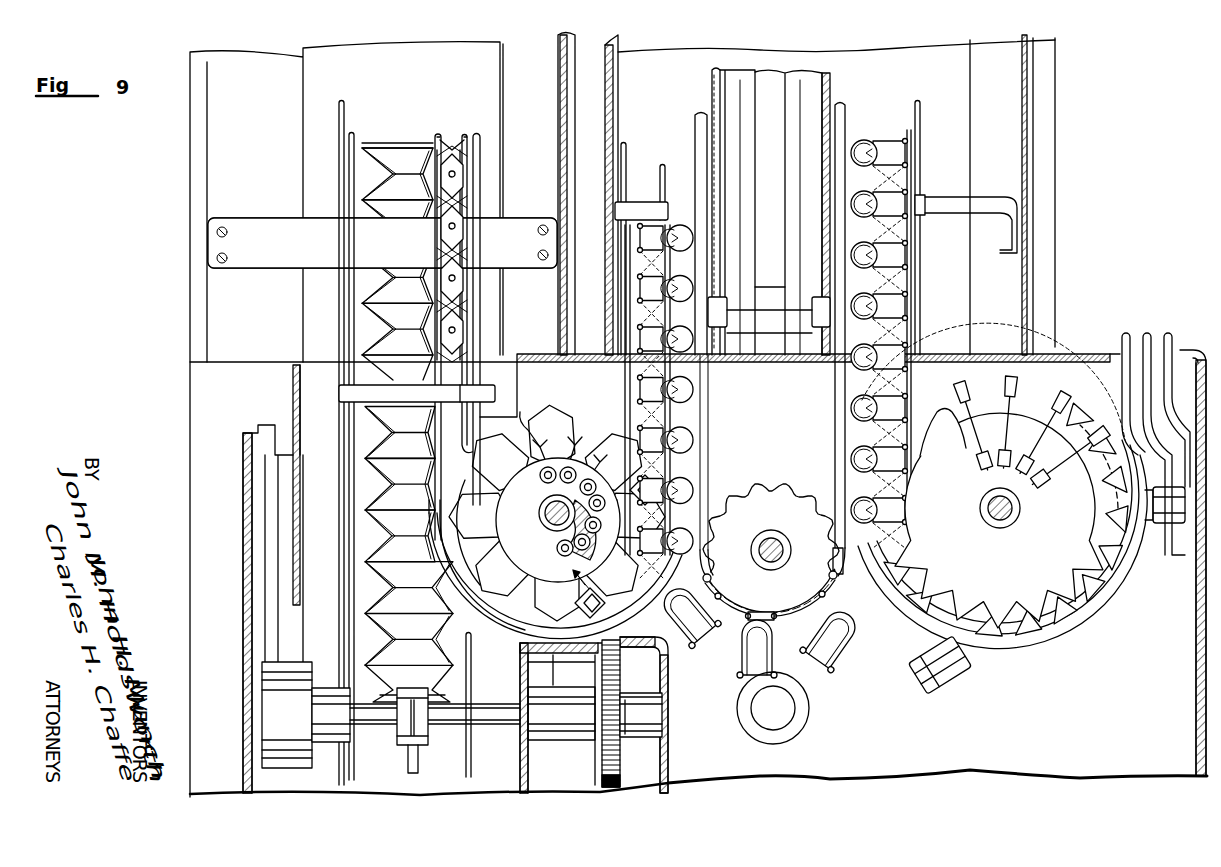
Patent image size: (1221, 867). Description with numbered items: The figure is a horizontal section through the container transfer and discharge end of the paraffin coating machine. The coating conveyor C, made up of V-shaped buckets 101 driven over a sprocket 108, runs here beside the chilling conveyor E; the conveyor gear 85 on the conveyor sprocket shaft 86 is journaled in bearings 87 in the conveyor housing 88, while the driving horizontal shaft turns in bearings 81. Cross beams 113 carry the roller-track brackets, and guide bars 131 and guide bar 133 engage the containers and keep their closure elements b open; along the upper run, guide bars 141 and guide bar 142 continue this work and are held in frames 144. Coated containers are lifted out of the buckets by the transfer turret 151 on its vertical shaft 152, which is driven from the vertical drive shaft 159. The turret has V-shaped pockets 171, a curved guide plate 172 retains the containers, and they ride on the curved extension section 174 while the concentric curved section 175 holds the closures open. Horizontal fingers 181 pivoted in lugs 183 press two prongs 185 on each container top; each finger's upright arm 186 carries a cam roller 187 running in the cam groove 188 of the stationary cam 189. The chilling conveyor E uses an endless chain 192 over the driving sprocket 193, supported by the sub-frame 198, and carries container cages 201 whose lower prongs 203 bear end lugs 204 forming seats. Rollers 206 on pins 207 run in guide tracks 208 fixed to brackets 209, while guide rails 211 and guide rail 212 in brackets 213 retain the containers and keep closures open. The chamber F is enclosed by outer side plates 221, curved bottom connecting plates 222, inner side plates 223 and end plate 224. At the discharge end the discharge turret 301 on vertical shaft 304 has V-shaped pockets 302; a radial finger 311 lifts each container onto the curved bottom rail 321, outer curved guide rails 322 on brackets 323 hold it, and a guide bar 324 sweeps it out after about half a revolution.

The bearings 81 is at (638, 712).
The conveyor gear 85 is at (618, 760).
The conveyor sprocket shaft 86 is at (503, 715).
The bearings 87 is at (570, 676).
The conveyor housing 88 is at (268, 625).
The V-shaped buckets 101 is at (393, 282).
The sprocket 108 is at (408, 742).
The cross beams 113 is at (262, 262).
The guide bars 131 is at (348, 635).
The guide bar 133 is at (341, 565).
The guide bars 141 is at (477, 135).
The guide bar 142 is at (438, 135).
The frames 144 is at (370, 392).
The transfer turret 151 is at (560, 432).
The vertical shaft 152 is at (545, 514).
The vertical drive shaft 159 is at (770, 560).
The V-shaped pockets 171 is at (553, 406).
The curved guide plate 172 is at (522, 652).
The curved extension section 174 is at (513, 628).
The concentric curved section 175 is at (497, 610).
The horizontal fingers 181 is at (588, 445).
The lugs 183 is at (540, 468).
The prongs 185 is at (533, 428).
The upright arm 186 is at (540, 480).
The cam roller 187 is at (588, 482).
The cam groove 188 is at (558, 520).
The stationary cam 189 is at (572, 580).
The endless chain 192 is at (736, 606).
The driving sprocket 193 is at (768, 495).
The sub-frame 198 is at (800, 88).
The container cages 201 is at (855, 185).
The lower prongs 203 is at (737, 652).
The end lugs 204 is at (638, 290).
The rollers 206 is at (714, 574).
The pins 207 is at (775, 596).
The guide tracks 208 is at (705, 190).
The brackets 209 is at (797, 302).
The guide rails 211 is at (626, 155).
The guide rail 212 is at (665, 168).
The brackets 213 is at (640, 204).
The outer side plates 221 is at (828, 96).
The curved bottom connecting plates 222 is at (718, 70).
The inner side plates 223 is at (612, 112).
The end plate 224 is at (562, 360).
The discharge turret 301 is at (993, 475).
The V-shaped pockets 302 is at (1060, 582).
The vertical shaft 304 is at (1022, 508).
The radial finger 311 is at (1010, 406).
The curved bottom rail 321 is at (1068, 600).
The outer curved guide rails 322 is at (1120, 600).
The brackets 323 is at (1178, 525).
The guide bar 324 is at (1125, 338).
The coating conveyor C is at (386, 474).
The chilling conveyor E is at (822, 408).
The chilling chamber F is at (655, 68).
The closure element b is at (636, 488).